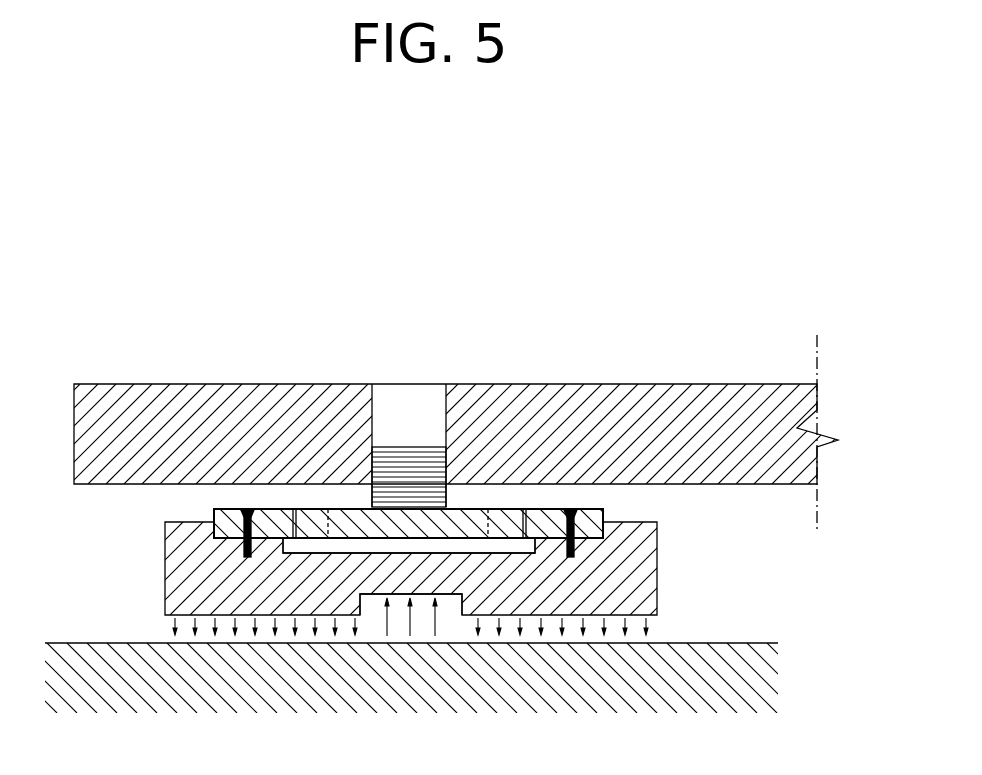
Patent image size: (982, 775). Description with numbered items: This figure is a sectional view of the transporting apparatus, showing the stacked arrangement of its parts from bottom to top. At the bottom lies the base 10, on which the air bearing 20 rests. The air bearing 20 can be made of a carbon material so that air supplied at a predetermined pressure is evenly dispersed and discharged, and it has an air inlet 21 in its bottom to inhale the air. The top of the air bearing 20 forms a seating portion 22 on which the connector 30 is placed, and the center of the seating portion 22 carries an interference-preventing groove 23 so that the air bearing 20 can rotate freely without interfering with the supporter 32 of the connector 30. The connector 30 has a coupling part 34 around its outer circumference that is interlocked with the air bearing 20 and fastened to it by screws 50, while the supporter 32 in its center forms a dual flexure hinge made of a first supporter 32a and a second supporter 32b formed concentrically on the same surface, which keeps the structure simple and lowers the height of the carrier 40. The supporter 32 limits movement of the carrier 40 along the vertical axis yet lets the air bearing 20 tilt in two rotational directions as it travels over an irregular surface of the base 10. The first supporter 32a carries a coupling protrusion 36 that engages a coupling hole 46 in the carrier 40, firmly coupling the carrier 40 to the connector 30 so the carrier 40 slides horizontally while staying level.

The base 10 is at (792, 673).
The air bearing 20 is at (156, 578).
The air inlet 21 is at (450, 600).
The seating portion 22 is at (243, 547).
The interference-preventing groove 23 is at (372, 556).
The connector 30 is at (204, 511).
The supporter 32 is at (714, 490).
The first supporter 32a is at (478, 510).
The second supporter 32b is at (518, 510).
The coupling part 34 is at (585, 531).
The coupling protrusion 36 is at (438, 400).
The carrier 40 is at (175, 376).
The coupling hole 46 is at (416, 447).
The screw 50 is at (572, 560).